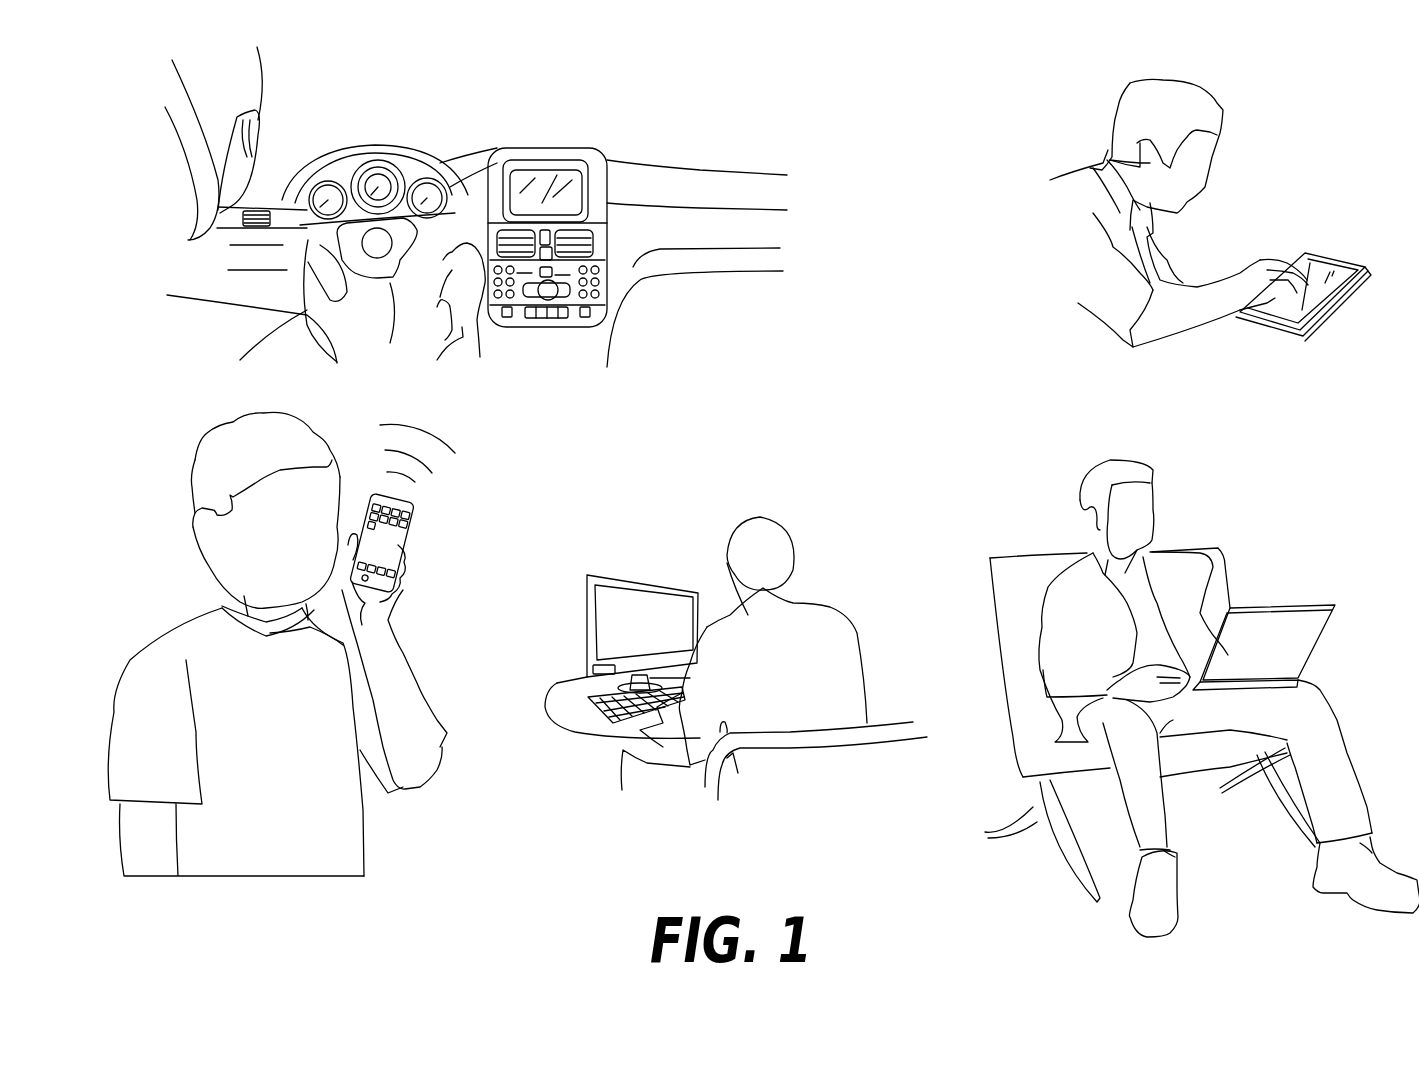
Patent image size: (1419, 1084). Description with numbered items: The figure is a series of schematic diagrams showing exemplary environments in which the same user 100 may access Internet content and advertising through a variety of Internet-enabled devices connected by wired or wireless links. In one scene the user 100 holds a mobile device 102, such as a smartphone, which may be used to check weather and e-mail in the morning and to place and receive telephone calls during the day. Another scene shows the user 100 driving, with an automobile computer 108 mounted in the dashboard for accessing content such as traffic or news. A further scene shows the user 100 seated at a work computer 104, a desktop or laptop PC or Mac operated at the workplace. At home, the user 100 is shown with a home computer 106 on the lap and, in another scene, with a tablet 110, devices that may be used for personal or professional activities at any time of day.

The user 100 is at (265, 95).
The mobile device 102 is at (418, 518).
The work computer 104 is at (628, 575).
The home computer 106 is at (1265, 603).
The automobile computer 108 is at (563, 160).
The tablet 110 is at (1313, 240).